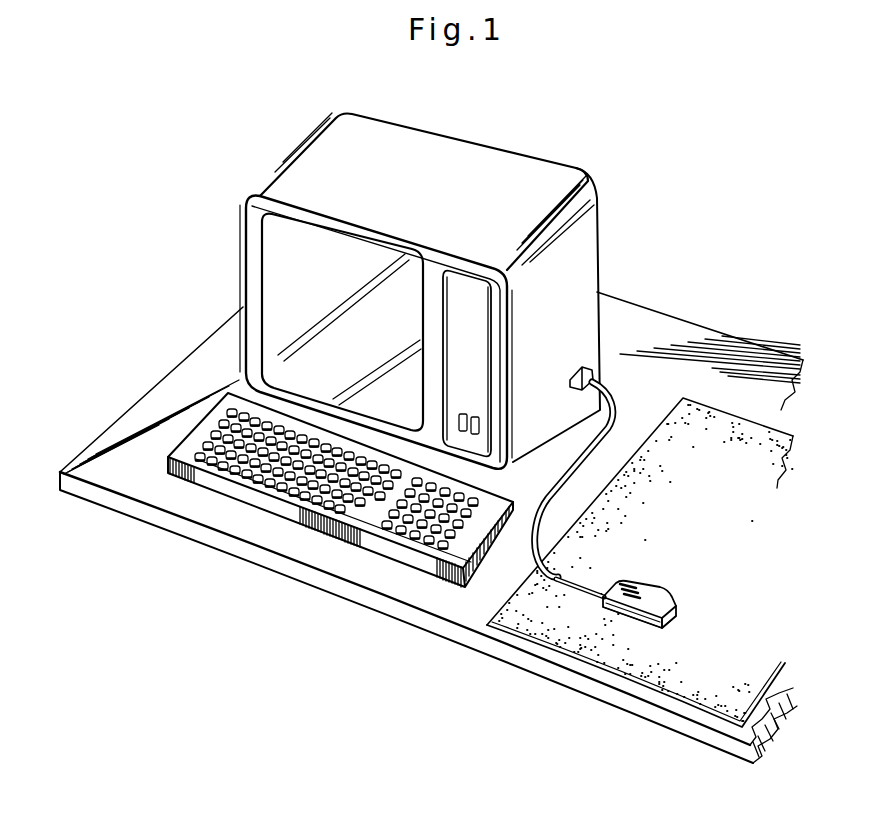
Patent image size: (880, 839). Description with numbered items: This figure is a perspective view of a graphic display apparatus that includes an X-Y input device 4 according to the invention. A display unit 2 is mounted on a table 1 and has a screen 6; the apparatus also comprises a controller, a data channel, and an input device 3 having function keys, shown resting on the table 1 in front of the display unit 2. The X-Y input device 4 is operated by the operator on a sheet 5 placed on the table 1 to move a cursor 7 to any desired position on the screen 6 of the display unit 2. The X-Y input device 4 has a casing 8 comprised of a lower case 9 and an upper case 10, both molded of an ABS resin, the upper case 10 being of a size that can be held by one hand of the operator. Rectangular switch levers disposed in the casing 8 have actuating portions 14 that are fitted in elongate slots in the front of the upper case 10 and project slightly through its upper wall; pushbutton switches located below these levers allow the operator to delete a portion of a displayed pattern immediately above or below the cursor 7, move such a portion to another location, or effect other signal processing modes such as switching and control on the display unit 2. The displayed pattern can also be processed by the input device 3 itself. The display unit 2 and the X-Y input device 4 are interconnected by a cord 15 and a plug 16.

The table 1 is at (366, 578).
The display unit 2 is at (456, 174).
The input device 3 is at (288, 513).
The X-Y input device 4 is at (678, 591).
The sheet 5 is at (610, 660).
The screen 6 is at (283, 293).
The cursor 7 is at (318, 258).
The casing 8 is at (666, 618).
The lower case 9 is at (639, 629).
The upper case 10 is at (647, 590).
The actuating portions 14 is at (620, 579).
The cord 15 is at (543, 503).
The plug 16 is at (582, 366).